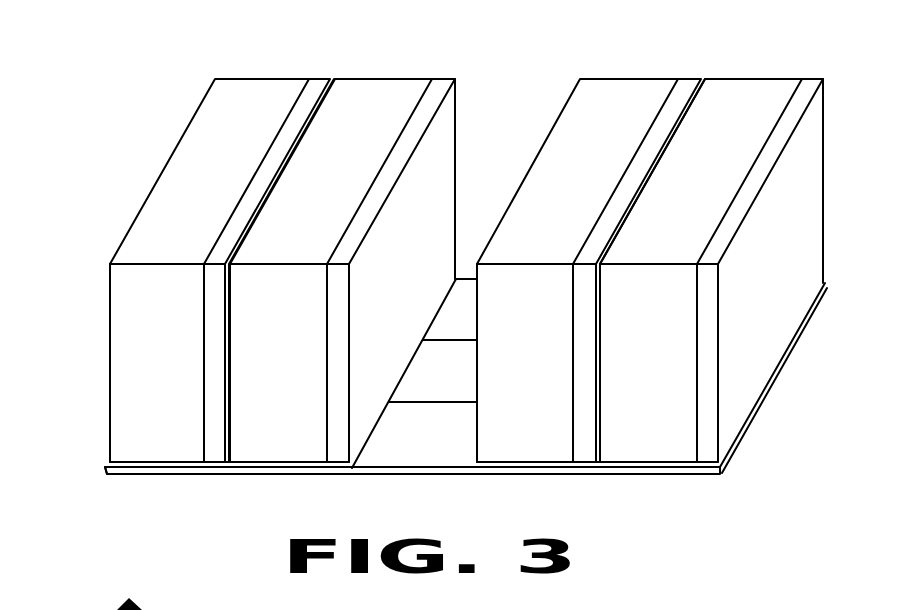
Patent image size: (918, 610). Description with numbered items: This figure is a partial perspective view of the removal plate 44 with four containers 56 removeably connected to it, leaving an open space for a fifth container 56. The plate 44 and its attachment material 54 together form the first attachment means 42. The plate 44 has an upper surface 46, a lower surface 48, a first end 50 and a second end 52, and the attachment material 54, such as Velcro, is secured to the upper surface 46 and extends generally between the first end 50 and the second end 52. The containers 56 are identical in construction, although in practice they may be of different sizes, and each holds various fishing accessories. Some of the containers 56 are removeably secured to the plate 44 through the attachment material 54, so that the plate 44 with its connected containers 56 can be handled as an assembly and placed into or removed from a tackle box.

The first attachment means 42 is at (413, 385).
The plate 44 is at (448, 469).
The upper surface 46 is at (400, 447).
The lower surface 48 is at (170, 476).
The first end 50 is at (105, 469).
The second end 52 is at (722, 470).
The attachment material 54 is at (462, 358).
The containers 56 is at (242, 90).